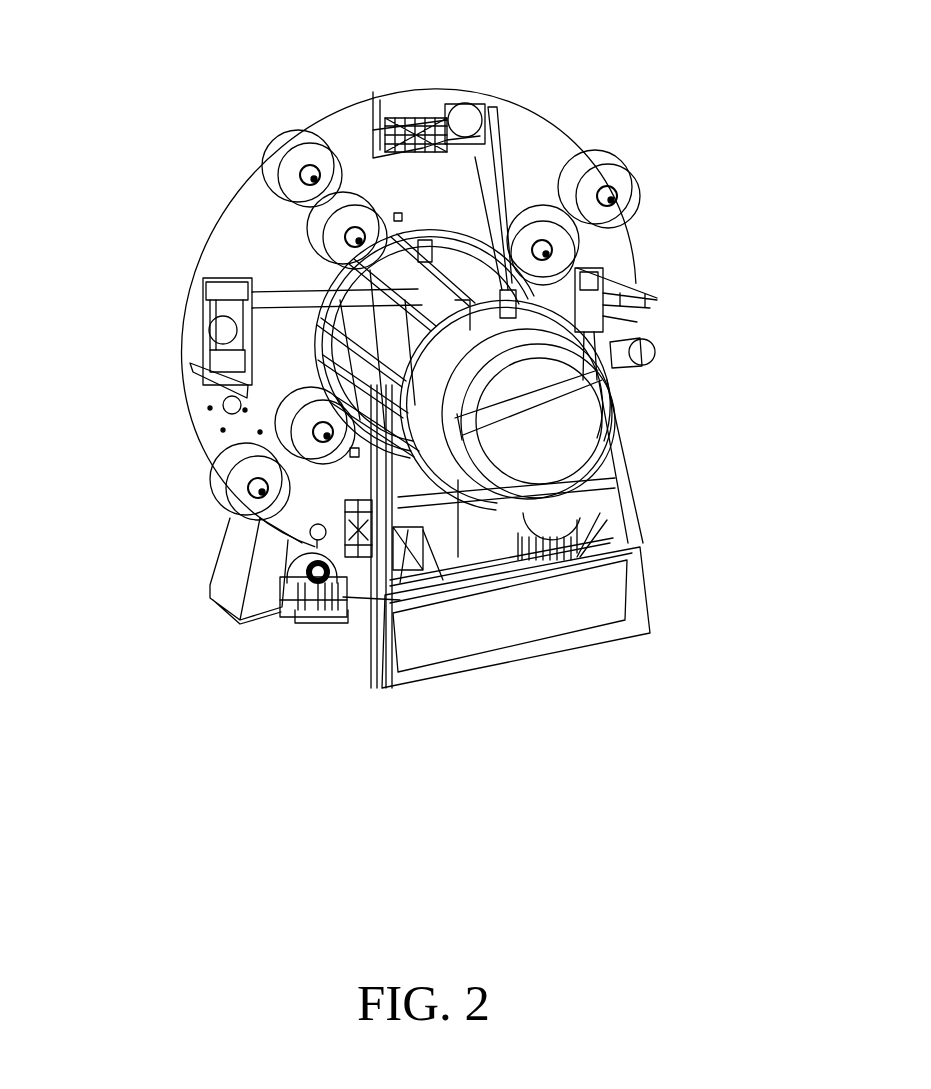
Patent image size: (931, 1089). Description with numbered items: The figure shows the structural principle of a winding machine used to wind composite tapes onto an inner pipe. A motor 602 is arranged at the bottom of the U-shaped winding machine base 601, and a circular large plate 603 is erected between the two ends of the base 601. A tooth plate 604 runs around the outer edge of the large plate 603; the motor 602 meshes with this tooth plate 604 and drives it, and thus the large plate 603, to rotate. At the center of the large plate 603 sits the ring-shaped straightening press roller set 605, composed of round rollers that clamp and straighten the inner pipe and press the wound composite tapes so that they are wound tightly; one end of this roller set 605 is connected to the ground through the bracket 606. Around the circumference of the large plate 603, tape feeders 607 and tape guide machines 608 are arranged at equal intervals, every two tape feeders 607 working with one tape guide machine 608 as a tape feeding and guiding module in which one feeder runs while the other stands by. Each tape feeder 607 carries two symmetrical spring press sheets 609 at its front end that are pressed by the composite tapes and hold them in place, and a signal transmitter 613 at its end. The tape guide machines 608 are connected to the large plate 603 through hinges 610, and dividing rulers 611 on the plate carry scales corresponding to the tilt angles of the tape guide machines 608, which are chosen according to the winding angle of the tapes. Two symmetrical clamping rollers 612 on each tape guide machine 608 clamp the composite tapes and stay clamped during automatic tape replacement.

The winding machine base 601 is at (235, 575).
The motor 602 is at (290, 605).
The large plate 603 is at (188, 320).
The tooth plate 604 is at (200, 245).
The straightening press roller set 605 is at (655, 307).
The bracket 606 is at (647, 592).
The tape feeders 607 is at (340, 252).
The tape guide machines 608 is at (475, 93).
The spring press sheets 609 is at (613, 195).
The hinges 610 is at (352, 562).
The dividing rulers 611 is at (375, 93).
The clamping rollers 612 is at (445, 103).
The signal transmitter 613 is at (303, 160).